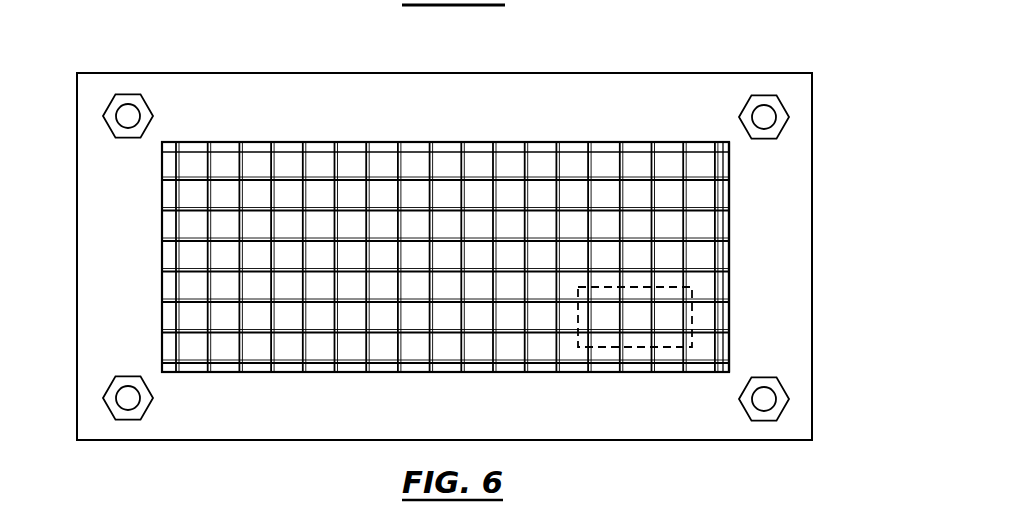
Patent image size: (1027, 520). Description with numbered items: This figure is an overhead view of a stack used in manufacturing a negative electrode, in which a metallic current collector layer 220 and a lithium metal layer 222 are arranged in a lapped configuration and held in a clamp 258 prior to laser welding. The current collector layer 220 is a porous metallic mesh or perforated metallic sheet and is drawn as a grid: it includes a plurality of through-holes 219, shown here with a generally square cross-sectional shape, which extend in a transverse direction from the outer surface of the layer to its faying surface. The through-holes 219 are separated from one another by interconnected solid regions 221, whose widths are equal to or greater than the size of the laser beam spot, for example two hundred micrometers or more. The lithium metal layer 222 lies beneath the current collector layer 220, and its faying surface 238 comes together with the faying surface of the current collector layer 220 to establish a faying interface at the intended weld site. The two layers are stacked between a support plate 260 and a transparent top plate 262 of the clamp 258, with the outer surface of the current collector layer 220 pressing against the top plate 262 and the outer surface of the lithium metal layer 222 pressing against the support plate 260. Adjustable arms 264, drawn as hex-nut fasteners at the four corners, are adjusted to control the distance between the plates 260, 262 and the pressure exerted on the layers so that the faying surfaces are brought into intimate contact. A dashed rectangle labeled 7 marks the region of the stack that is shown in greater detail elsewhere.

The detail region shown in FIG. 7 is at (693, 315).
The through-holes 219 is at (188, 260).
The current collector layer 220 is at (444, 231).
The interconnected solid regions 221 is at (207, 320).
The lithium metal layer 222 is at (730, 170).
The faying surface of the lithium metal layer 238 is at (410, 160).
The clamp 258 is at (100, 73).
The support plate 260 is at (813, 362).
The transparent top plate 262 is at (503, 424).
The adjustable arms 264 is at (762, 94).